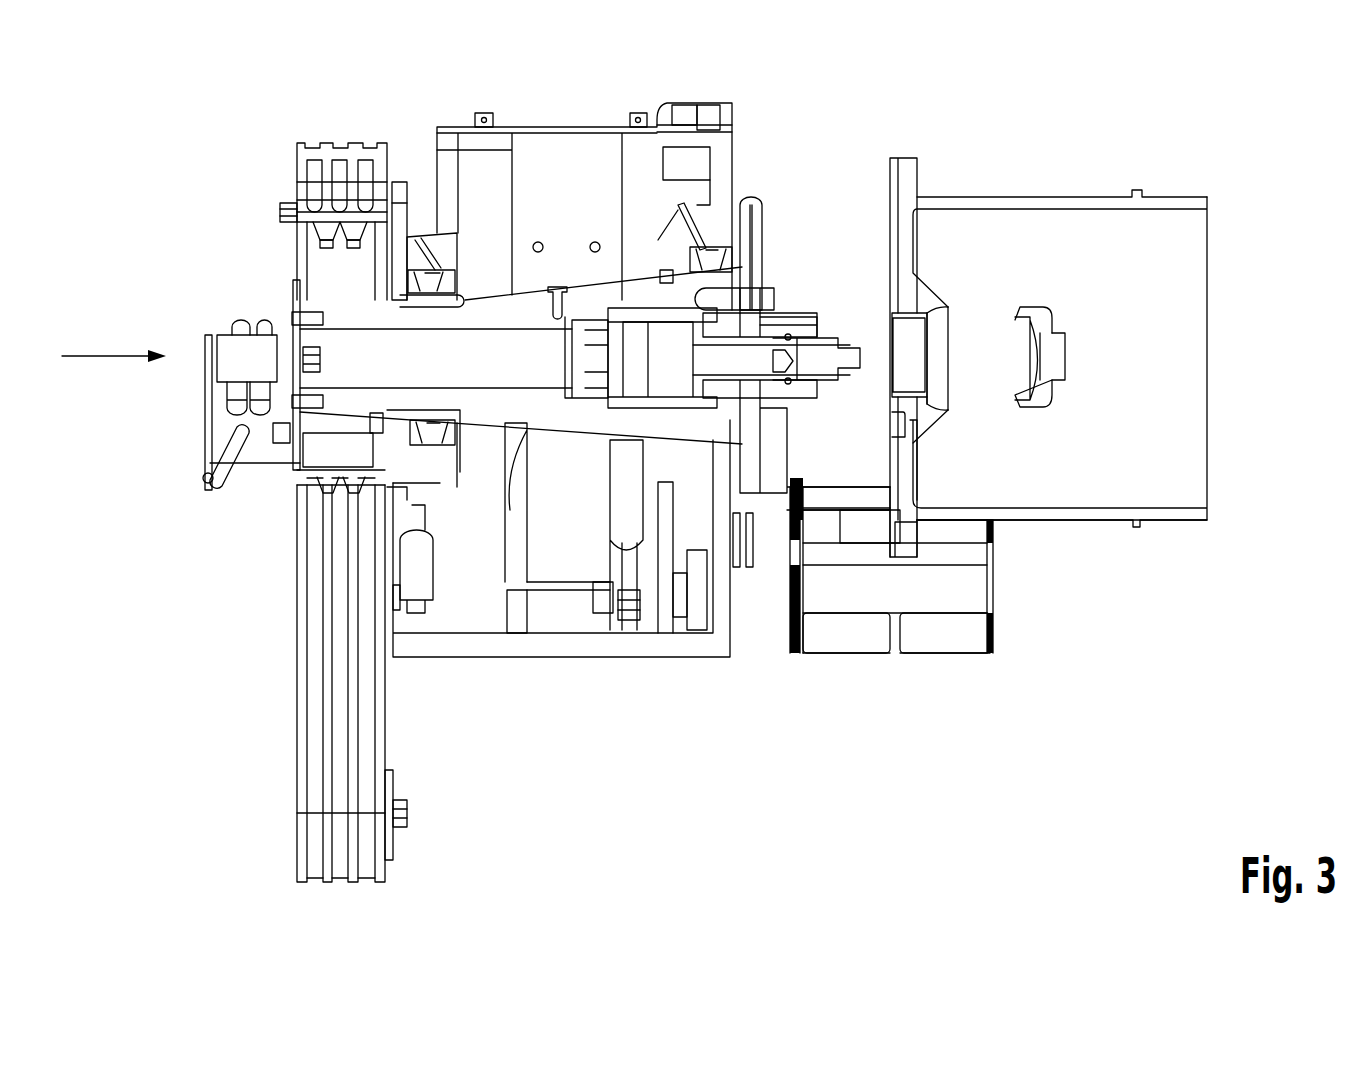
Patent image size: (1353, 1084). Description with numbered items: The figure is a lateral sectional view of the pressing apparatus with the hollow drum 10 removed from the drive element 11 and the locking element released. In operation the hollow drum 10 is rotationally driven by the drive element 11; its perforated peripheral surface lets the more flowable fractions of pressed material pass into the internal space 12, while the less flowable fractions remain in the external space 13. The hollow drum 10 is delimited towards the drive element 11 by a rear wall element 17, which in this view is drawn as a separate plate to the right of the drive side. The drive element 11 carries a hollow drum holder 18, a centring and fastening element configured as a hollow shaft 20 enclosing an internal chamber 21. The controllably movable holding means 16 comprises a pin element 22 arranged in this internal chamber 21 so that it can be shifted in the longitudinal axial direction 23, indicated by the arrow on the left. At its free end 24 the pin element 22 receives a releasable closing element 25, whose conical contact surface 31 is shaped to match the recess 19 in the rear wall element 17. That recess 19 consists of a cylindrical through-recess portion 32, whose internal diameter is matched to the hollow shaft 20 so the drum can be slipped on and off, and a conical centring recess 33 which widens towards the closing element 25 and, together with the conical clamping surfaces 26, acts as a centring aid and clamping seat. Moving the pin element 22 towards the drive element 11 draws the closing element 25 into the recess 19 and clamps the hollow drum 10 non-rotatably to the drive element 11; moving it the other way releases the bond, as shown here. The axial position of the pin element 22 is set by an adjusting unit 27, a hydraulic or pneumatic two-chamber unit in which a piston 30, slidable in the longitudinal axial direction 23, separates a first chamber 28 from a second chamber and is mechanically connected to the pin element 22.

The hollow drum 10 is at (1100, 522).
The drive element 11 is at (750, 200).
The internal space 12 is at (1180, 256).
The external space 13 is at (1182, 158).
The holding means 16 is at (810, 400).
The rear wall element 17 is at (893, 215).
The hollow drum holder 18 is at (780, 306).
The recess 19 is at (930, 420).
The hollow shaft 20 is at (800, 320).
The internal chamber 21 is at (820, 337).
The pin element 22 is at (855, 350).
The longitudinal axial direction 23 is at (118, 350).
The free end 24 is at (860, 370).
The closing element 25 is at (1060, 343).
The conical clamping surfaces 26 is at (940, 320).
The adjusting unit 27 is at (635, 385).
The first chamber 28 is at (640, 405).
The piston 30 is at (660, 330).
The conical contact surface 31 is at (1022, 306).
The through-recess portion 32 is at (912, 405).
The conical centring recess 33 is at (942, 356).